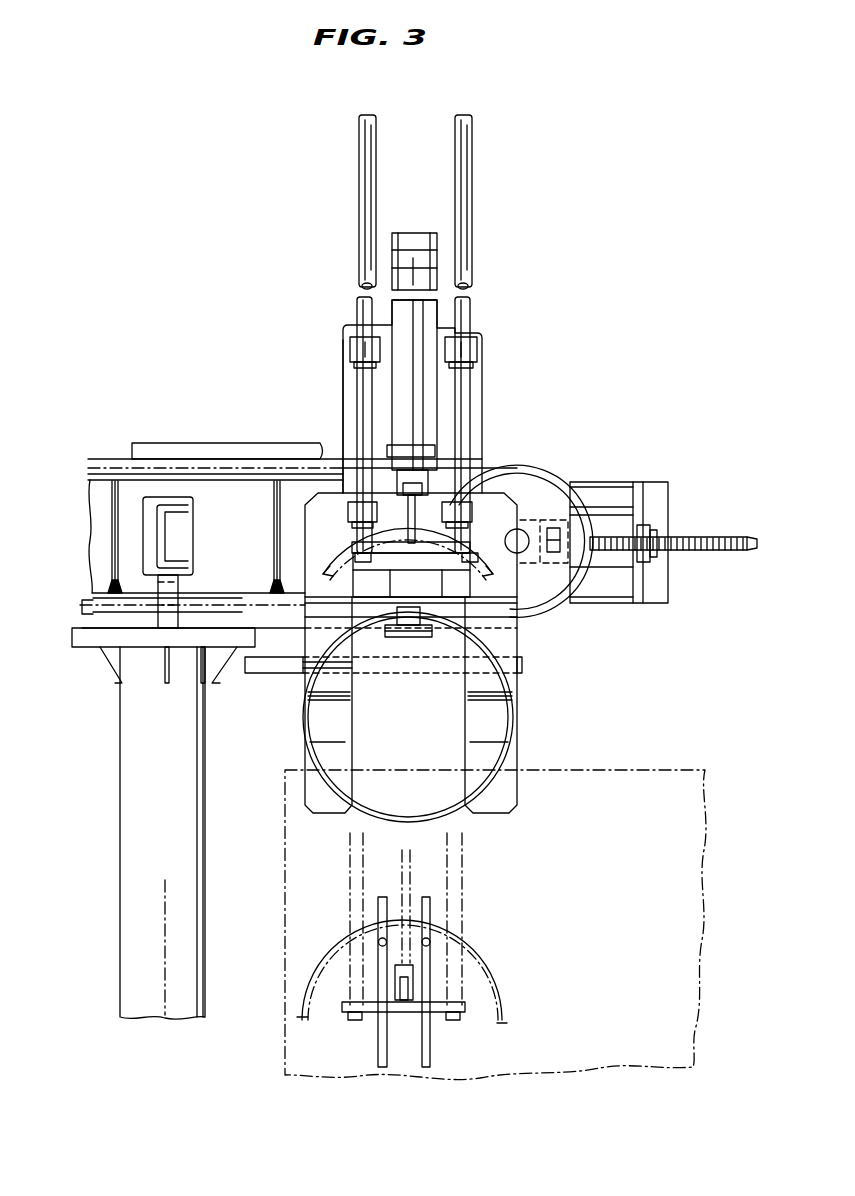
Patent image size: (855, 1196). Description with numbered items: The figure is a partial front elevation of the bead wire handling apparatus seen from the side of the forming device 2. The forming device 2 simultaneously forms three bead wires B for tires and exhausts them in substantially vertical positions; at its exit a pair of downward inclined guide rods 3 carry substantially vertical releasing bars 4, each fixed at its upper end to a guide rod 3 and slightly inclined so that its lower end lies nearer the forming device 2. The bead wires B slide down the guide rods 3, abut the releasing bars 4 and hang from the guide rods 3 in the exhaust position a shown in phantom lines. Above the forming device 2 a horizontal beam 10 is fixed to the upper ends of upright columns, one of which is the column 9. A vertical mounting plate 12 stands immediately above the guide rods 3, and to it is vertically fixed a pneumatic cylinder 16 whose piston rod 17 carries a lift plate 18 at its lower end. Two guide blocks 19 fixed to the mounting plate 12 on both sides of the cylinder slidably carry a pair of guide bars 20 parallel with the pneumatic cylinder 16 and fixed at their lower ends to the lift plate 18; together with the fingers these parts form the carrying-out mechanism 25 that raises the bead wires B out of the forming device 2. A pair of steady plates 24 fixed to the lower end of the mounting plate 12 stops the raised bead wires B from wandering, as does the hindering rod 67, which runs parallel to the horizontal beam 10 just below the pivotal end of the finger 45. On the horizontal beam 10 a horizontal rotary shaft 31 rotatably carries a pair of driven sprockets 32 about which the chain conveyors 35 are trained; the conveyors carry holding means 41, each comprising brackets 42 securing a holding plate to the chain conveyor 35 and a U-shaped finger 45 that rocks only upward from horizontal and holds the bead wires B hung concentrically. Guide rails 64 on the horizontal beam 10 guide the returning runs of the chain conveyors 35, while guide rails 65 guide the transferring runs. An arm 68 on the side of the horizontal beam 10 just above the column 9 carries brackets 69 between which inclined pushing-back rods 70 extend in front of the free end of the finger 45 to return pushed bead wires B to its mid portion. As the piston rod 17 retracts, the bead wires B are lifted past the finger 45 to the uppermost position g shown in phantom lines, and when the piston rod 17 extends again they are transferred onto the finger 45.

The forming device 2 is at (612, 770).
The guide rods 3 is at (382, 897).
The releasing bars 4 is at (425, 1028).
The column 9 is at (175, 855).
The horizontal beam 10 is at (97, 506).
The mounting plate 12 is at (445, 396).
The pneumatic cylinder 16 is at (413, 384).
The piston rod 17 is at (450, 496).
The lift plate 18 is at (352, 547).
The guide blocks 19 is at (466, 351).
The guide bars 20 is at (462, 182).
The steady plates 24 is at (510, 640).
The carrying-out mechanism 25 is at (490, 378).
The rotary shaft 31 is at (540, 513).
The driven sprockets 32 is at (556, 505).
The chain conveyors 35 is at (330, 467).
The holding means 41 is at (443, 443).
The brackets 42 is at (470, 601).
The finger 45 is at (400, 640).
The guide rails 64 is at (205, 456).
The guide rails 65 is at (273, 617).
The hindering rod 67 is at (268, 665).
The arm 68 is at (143, 545).
The brackets 69 is at (172, 590).
The pushing-back rods 70 is at (90, 638).
The bead wire B is at (510, 720).
The uppermost position g is at (333, 590).
The exhaust position a is at (478, 976).